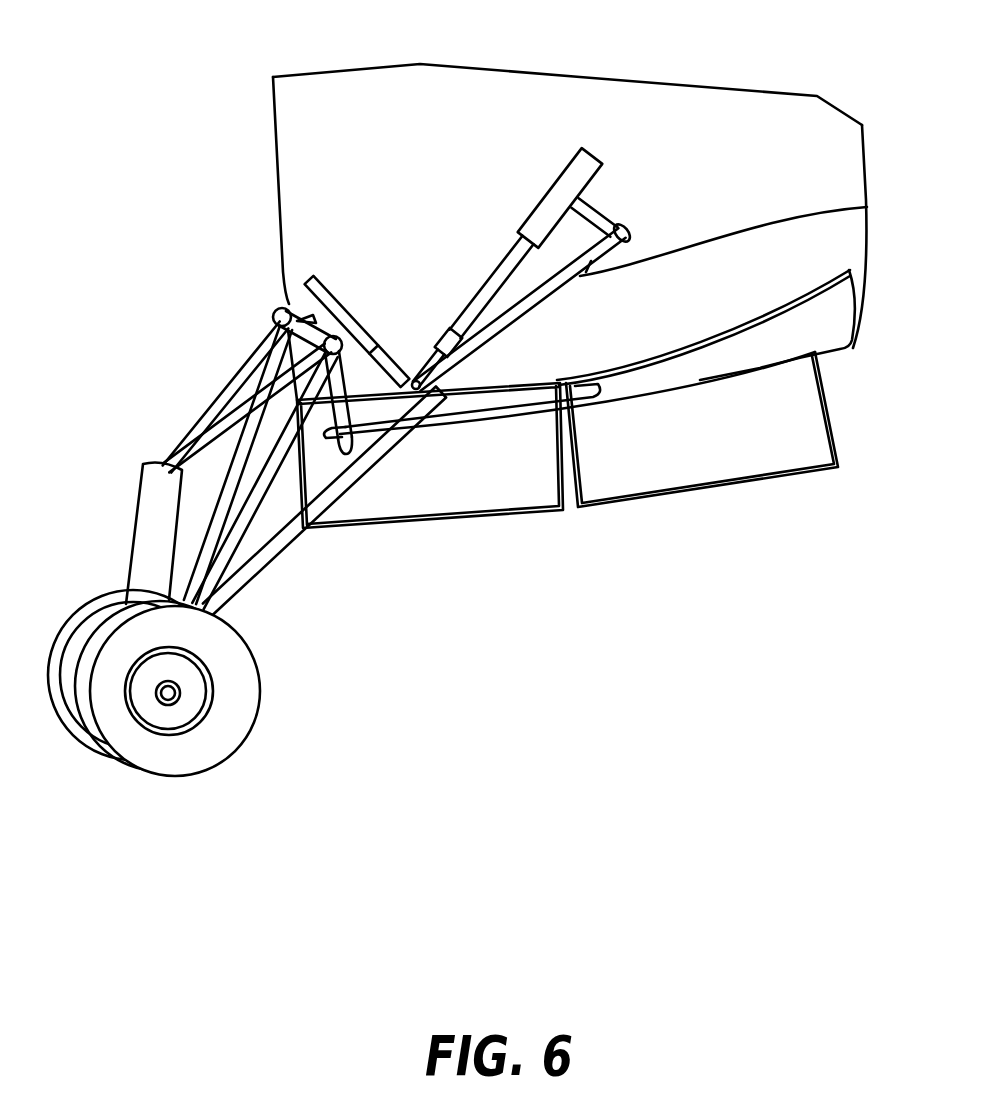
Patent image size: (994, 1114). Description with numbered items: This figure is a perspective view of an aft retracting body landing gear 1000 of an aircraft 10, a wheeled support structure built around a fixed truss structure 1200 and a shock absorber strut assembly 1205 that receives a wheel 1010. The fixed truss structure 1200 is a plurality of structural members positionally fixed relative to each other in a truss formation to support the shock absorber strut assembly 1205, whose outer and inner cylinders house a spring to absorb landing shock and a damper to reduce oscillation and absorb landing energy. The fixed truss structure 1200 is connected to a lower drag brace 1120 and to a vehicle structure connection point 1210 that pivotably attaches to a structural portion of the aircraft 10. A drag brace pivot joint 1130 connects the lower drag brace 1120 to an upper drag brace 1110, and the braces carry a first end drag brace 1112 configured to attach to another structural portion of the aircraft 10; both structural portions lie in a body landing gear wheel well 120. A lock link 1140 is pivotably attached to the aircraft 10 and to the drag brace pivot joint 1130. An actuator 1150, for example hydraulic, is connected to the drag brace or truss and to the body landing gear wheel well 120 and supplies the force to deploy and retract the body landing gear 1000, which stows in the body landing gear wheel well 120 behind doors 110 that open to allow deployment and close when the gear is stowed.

The aircraft 10 is at (752, 90).
The body landing gear wheel well 120 is at (853, 178).
The upper drag brace 1110 is at (867, 207).
The doors 110 is at (819, 432).
The drag brace pivot joint 1130 is at (413, 397).
The lower drag brace 1120 is at (370, 440).
The actuator 1150 is at (568, 167).
The first end drag brace 1112 is at (646, 220).
The lock link 1140 is at (350, 323).
The vehicle structure connection point 1210 is at (281, 306).
The fixed truss structure 1200 is at (212, 407).
The shock absorber strut assembly 1205 is at (150, 486).
The wheel 1010 is at (78, 618).
The body landing gear 1000 is at (243, 563).